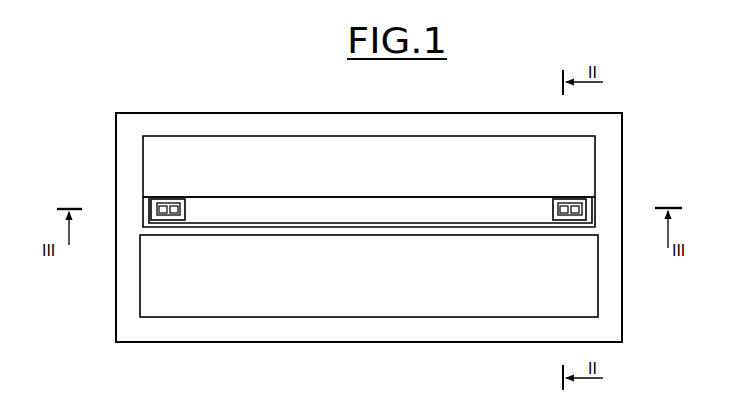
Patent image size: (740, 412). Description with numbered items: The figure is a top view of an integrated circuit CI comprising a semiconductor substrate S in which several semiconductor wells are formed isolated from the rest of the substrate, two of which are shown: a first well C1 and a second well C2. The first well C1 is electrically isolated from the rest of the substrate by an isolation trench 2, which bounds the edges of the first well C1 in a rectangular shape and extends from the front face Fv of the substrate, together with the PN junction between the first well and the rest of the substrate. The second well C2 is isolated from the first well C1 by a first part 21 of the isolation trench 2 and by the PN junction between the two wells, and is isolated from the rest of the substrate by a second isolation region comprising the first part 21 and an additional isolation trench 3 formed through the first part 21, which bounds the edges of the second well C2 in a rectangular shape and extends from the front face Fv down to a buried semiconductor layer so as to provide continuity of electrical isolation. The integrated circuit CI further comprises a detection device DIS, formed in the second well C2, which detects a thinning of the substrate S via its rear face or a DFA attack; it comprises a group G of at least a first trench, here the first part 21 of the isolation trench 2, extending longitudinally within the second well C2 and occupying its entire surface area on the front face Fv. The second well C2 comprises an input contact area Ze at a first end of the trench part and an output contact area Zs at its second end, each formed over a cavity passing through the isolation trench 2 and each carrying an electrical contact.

The isolation trench 2 is at (614, 142).
The additional isolation trench 3 is at (564, 229).
The first part of the isolation trench 21 is at (431, 210).
The first well C1 is at (373, 163).
The second well C2 is at (207, 210).
The group of at least a first trench G is at (282, 197).
The input contact area Ze is at (198, 222).
The output contact area Zs is at (588, 210).
The front face Fv is at (320, 289).
The semiconductor substrate S is at (372, 344).
The detection device DIS is at (113, 201).
The integrated circuit CI is at (642, 81).